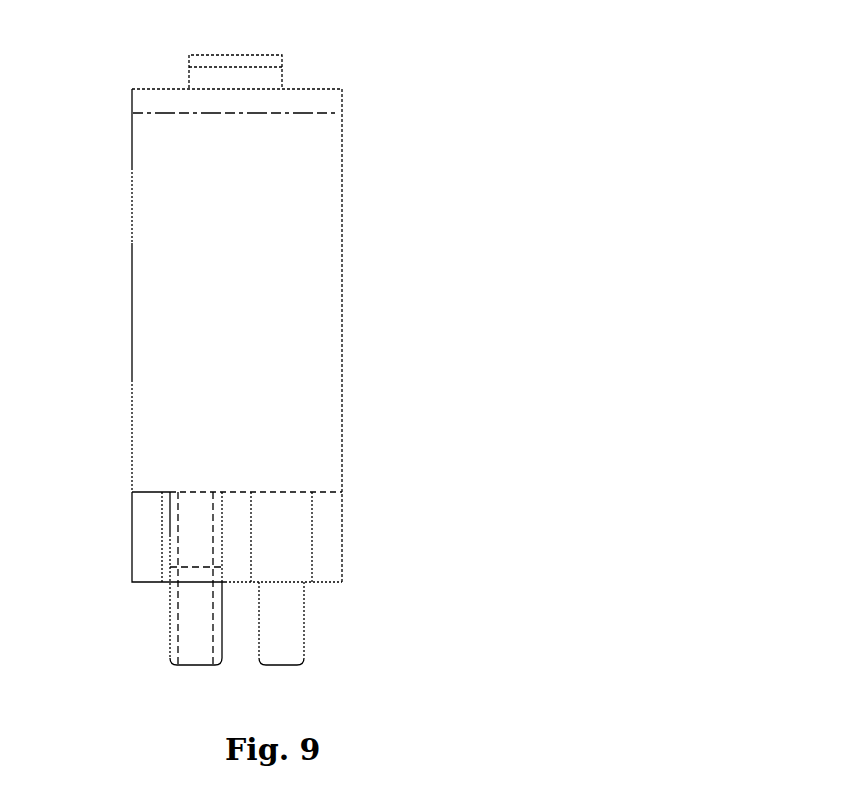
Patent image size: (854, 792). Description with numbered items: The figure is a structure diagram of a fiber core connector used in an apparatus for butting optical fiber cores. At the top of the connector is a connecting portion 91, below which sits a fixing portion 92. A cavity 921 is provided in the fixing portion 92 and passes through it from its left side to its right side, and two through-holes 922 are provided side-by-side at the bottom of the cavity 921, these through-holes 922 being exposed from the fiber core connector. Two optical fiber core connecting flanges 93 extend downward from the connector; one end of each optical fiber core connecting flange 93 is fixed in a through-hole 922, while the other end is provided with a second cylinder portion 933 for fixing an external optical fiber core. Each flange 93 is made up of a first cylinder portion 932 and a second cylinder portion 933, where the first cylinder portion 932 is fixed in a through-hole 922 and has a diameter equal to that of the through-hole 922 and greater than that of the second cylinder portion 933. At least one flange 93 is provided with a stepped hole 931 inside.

The connecting portion 91 is at (282, 75).
The fixing portion 92 is at (342, 173).
The cavity 921 is at (245, 331).
The through-holes 922 is at (312, 544).
The optical fiber core connecting flanges 93 is at (257, 578).
The stepped hole 931 is at (178, 620).
The first cylinder portion 932 is at (285, 508).
The second cylinder portion 933 is at (285, 604).